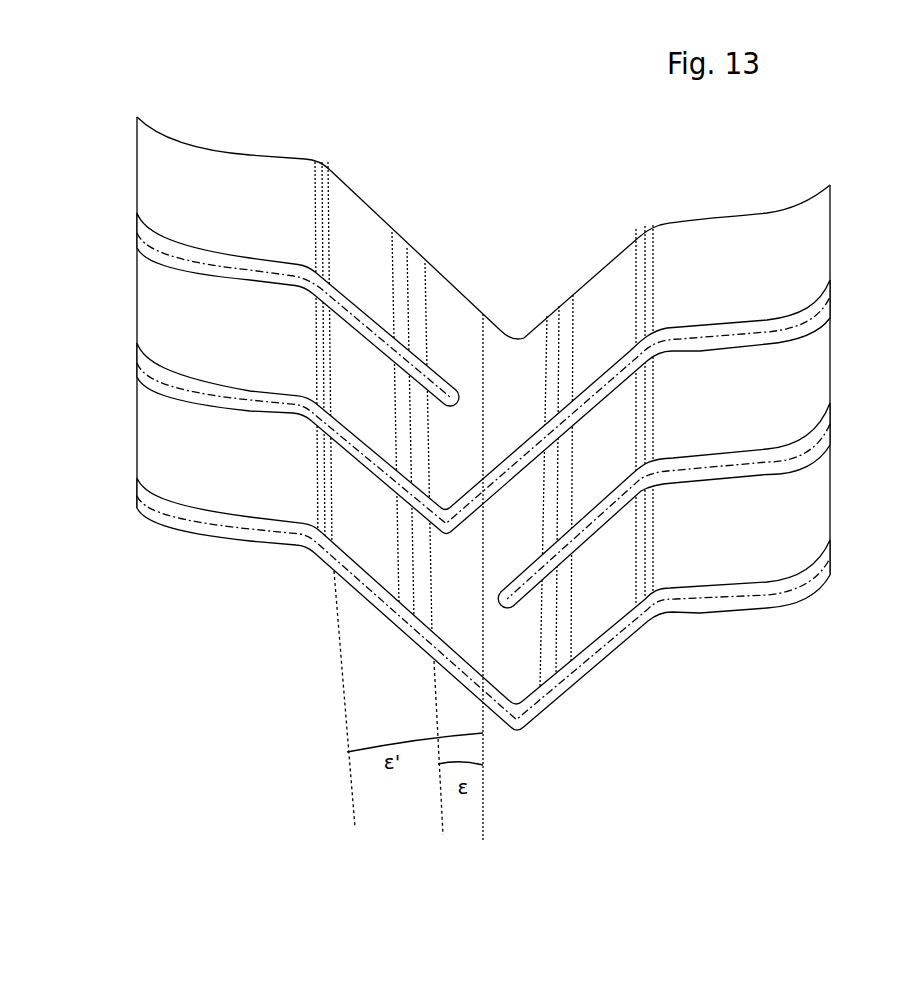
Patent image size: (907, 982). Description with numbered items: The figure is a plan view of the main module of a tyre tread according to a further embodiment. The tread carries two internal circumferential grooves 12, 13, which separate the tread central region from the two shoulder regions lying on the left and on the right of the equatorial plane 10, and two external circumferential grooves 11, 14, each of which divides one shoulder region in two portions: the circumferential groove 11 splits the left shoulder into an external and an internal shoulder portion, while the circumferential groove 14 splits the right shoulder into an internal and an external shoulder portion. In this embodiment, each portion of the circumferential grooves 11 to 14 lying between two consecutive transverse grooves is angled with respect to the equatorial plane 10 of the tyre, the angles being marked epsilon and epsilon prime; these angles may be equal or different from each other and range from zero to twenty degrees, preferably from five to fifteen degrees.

The equatorial plane 10 is at (485, 551).
The external circumferential groove 11 is at (327, 334).
The internal circumferential groove 12 is at (412, 420).
The internal circumferential groove 13 is at (556, 476).
The external circumferential groove 14 is at (643, 399).